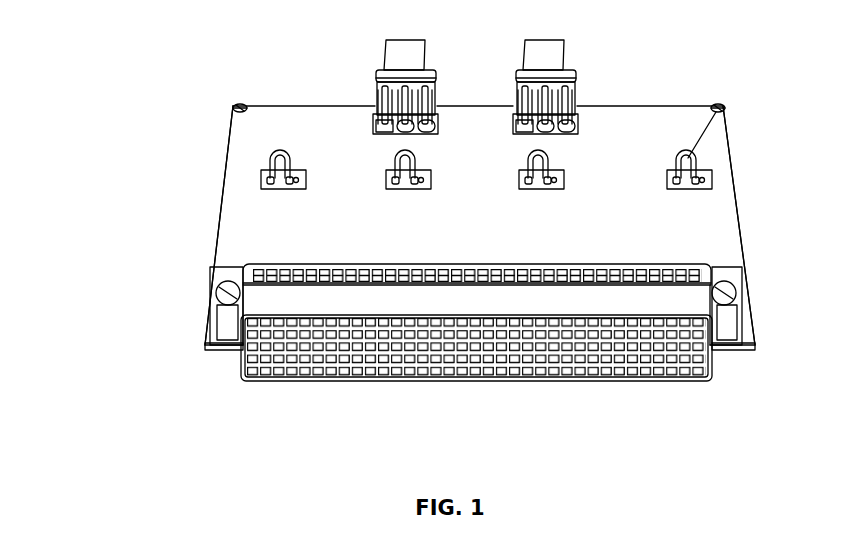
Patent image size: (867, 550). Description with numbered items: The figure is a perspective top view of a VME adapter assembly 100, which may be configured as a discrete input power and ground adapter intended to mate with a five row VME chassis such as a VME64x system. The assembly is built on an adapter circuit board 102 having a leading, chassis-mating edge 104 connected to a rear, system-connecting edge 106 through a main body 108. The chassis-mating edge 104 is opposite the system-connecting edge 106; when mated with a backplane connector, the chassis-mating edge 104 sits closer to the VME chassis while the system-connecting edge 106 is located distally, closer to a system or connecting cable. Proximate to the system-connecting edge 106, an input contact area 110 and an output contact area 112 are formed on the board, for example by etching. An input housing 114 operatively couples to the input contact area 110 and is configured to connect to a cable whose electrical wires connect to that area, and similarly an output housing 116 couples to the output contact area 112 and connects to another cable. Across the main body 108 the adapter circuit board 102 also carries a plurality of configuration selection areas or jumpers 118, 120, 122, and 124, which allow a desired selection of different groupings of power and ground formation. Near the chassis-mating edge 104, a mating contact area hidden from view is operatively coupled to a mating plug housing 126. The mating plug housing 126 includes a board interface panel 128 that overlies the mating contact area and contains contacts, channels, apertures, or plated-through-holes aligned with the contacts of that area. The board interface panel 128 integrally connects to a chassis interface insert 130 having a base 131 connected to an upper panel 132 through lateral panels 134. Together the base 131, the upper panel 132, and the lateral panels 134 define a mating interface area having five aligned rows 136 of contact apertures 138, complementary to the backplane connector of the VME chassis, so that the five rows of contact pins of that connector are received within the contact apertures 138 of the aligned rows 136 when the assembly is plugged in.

The VME adapter assembly 100 is at (132, 78).
The adapter circuit board 102 is at (738, 172).
The chassis-mating edge 104 is at (752, 327).
The system-connecting edge 106 is at (680, 105).
The main body 108 is at (235, 226).
The input contact area 110 is at (377, 106).
The output contact area 112 is at (577, 106).
The input housing 114 is at (407, 44).
The output housing 116 is at (545, 43).
The configuration selection area 118 is at (263, 172).
The configuration selection area 120 is at (388, 175).
The configuration selection area 122 is at (523, 172).
The configuration selection area 124 is at (725, 107).
The mating plug housing 126 is at (233, 349).
The board interface panel 128 is at (228, 272).
The chassis interface insert 130 is at (709, 388).
The base 131 is at (336, 383).
The upper panel 132 is at (690, 300).
The lateral panels 134 is at (240, 365).
The aligned rows 136 is at (232, 338).
The contact apertures 138 is at (497, 360).